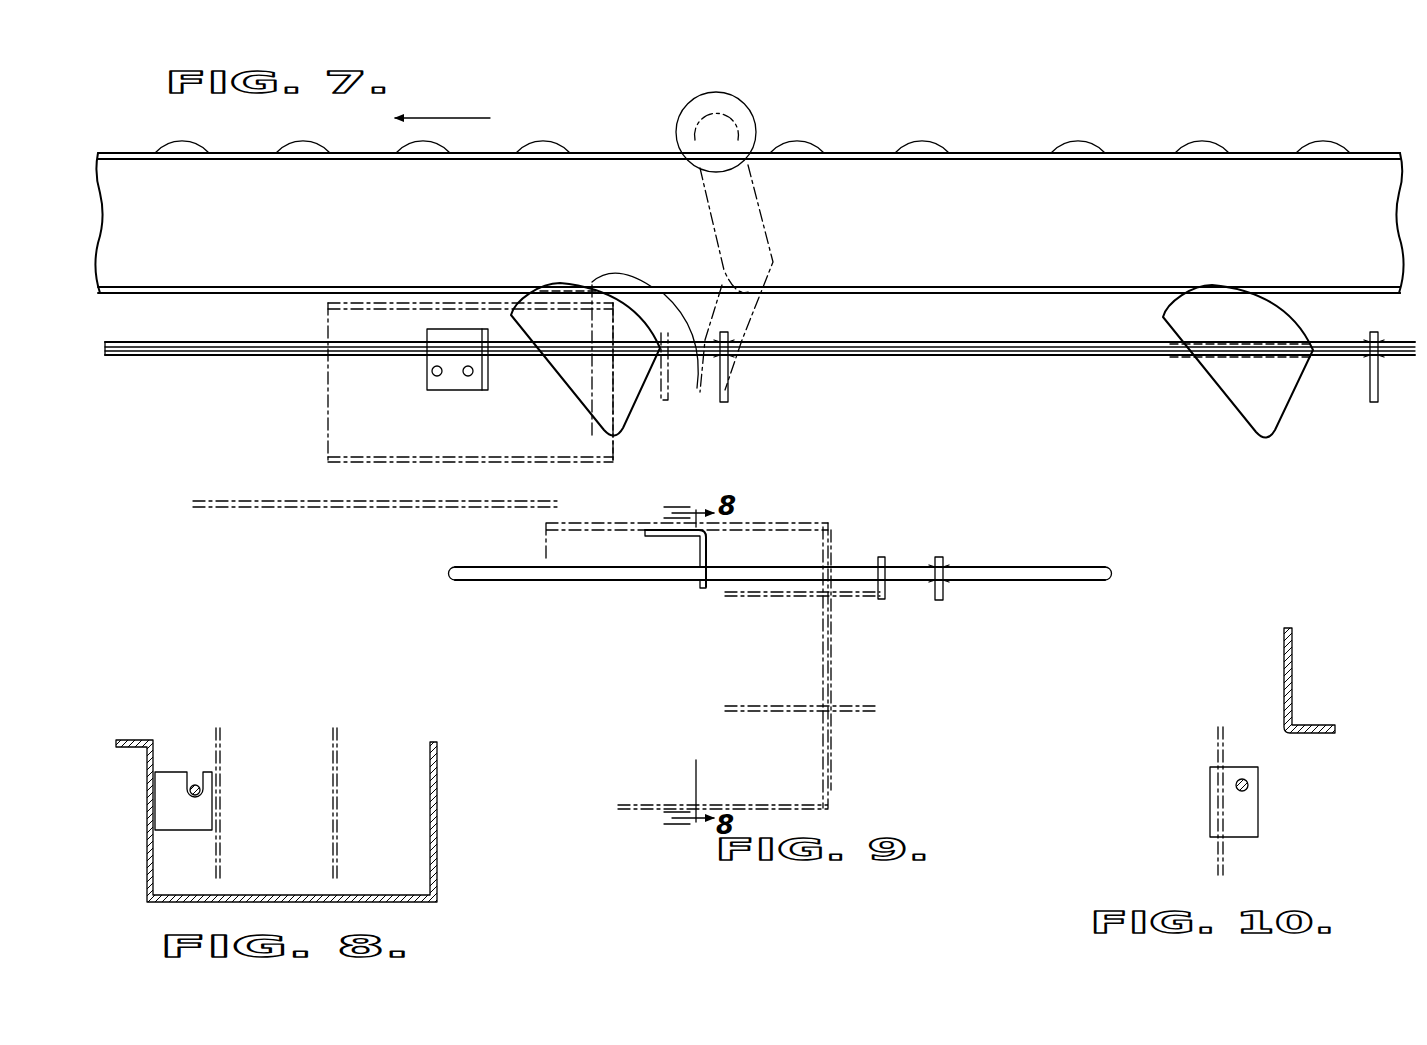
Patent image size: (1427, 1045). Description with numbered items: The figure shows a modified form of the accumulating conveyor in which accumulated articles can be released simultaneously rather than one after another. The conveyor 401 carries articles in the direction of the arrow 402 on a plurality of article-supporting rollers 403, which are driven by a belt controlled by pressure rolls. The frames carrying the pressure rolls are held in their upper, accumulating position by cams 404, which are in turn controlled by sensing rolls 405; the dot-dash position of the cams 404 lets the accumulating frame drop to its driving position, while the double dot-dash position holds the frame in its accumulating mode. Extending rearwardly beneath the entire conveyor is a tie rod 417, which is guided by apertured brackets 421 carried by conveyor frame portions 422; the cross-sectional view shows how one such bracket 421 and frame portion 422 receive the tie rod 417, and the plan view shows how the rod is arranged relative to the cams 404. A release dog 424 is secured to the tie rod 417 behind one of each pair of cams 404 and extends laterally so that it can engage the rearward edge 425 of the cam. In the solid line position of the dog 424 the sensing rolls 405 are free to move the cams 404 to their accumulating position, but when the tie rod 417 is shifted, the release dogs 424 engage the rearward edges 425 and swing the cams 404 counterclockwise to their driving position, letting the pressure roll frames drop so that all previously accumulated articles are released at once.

In FIG. 7, the conveyor 401 is at (1098, 112).
In FIG. 7, the arrow 402 is at (452, 118).
In FIG. 7, the article-supporting rollers 403 is at (925, 143).
In FIG. 7, the cam 404 is at (645, 415).
In FIG. 9, the cam 404 is at (838, 598).
In FIG. 8, the cam 404 is at (330, 826).
In FIG. 10, the cam 404 is at (1216, 758).
In FIG. 7, the sensing roll 405 is at (748, 125).
In FIG. 7, the tie rod 417 is at (1013, 358).
In FIG. 9, the tie rod 417 is at (1015, 567).
In FIG. 8, the tie rod 417 is at (198, 783).
In FIG. 10, the tie rod 417 is at (1247, 781).
In FIG. 7, the apertured bracket 421 is at (452, 377).
In FIG. 9, the apertured bracket 421 is at (702, 590).
In FIG. 8, the apertured bracket 421 is at (167, 771).
In FIG. 7, the conveyor frame portion 422 is at (328, 462).
In FIG. 9, the conveyor frame portion 422 is at (800, 524).
In FIG. 8, the conveyor frame portion 422 is at (435, 840).
In FIG. 7, the release dog 424 is at (730, 386).
In FIG. 9, the release dog 424 is at (945, 592).
In FIG. 10, the release dog 424 is at (1246, 812).
In FIG. 7, the rearward edge of the cam 425 is at (664, 332).